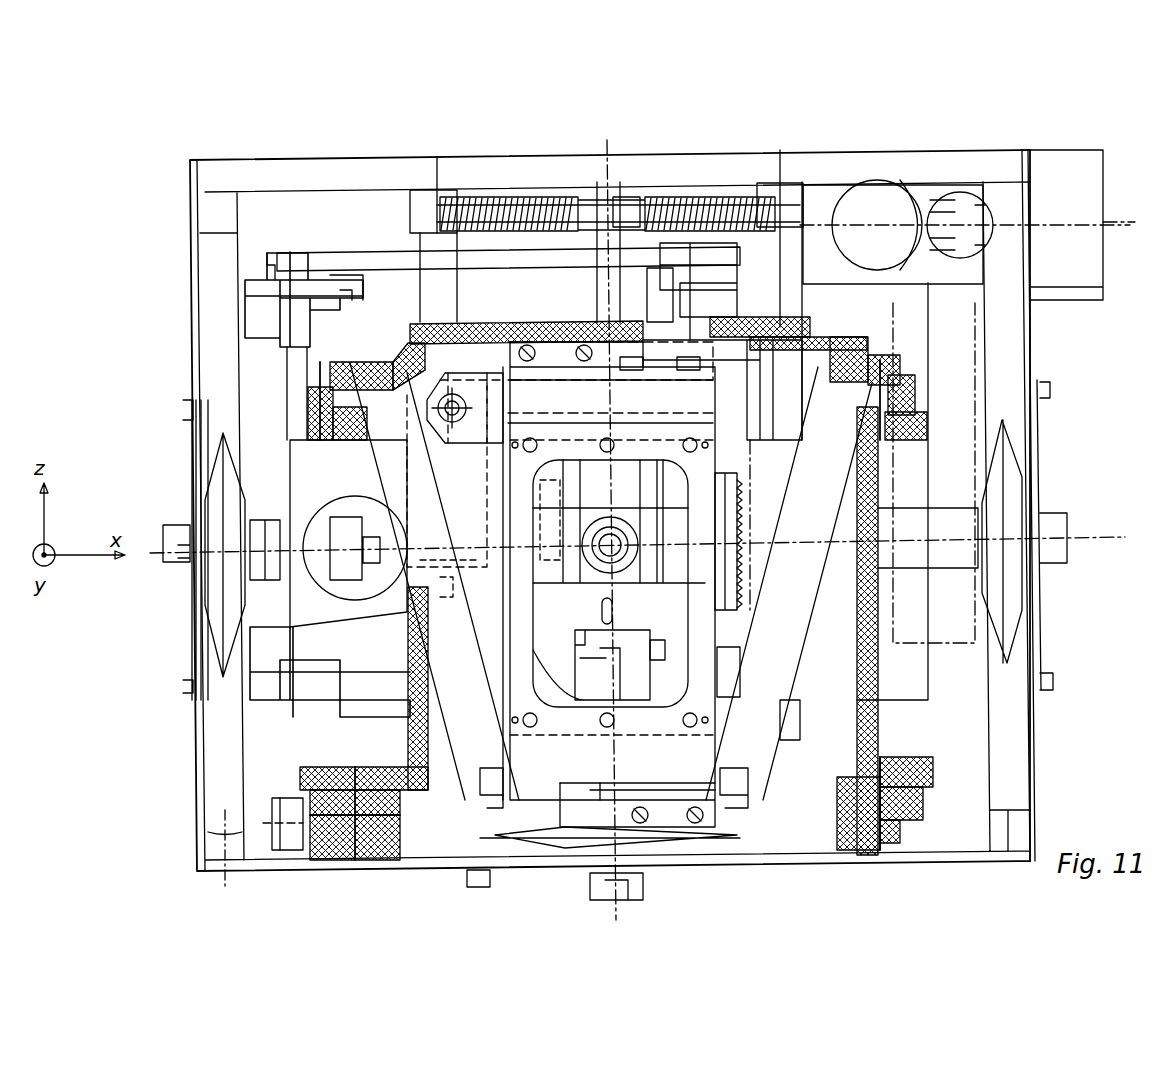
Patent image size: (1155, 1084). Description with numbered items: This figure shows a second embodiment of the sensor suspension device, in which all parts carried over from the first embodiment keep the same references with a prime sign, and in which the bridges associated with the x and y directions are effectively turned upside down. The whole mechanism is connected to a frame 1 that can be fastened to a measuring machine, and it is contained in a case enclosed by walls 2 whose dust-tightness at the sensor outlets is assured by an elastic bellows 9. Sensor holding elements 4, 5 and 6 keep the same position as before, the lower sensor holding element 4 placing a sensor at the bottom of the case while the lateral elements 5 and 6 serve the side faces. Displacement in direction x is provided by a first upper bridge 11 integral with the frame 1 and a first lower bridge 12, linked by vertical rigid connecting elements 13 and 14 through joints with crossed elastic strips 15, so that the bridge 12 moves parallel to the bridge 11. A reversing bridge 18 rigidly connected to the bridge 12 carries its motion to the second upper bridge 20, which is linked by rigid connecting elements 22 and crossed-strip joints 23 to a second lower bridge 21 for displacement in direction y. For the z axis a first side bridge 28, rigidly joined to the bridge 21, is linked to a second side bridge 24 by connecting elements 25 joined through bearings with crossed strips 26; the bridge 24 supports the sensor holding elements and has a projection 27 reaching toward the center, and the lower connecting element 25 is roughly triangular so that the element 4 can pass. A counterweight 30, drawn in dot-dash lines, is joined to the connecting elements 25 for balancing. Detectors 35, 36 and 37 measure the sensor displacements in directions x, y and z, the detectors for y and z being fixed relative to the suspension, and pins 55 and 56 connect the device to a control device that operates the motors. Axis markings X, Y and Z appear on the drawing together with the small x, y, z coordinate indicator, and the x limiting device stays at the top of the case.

The frame 1 is at (1050, 160).
The walls 2 is at (190, 306).
The lower sensor holding element 4 is at (573, 764).
The sensor holding element 5 is at (268, 530).
The sensor holding element 6 is at (950, 520).
The elastic bellows 9 is at (220, 468).
The first upper bridge 11 is at (853, 833).
The first lower bridge 12 is at (848, 337).
The vertical rigid connecting element 13 is at (408, 648).
The vertical rigid connecting element 14 is at (878, 672).
The joint with crossed elastic strips 15 is at (313, 432).
The reversing bridge 18 is at (611, 581).
The second upper bridge 20 is at (490, 775).
The second lower bridge 21 is at (720, 387).
The rigid connecting element 22 is at (517, 480).
The joint with crossed strips 23 is at (580, 365).
The second side bridge 24 is at (290, 410).
The connecting element 25 is at (377, 258).
The bearing with crossed strips 26 is at (300, 292).
The projection 27 is at (447, 488).
The first side bridge 28 is at (742, 568).
The counterweight 30 is at (955, 632).
The transducer 35 is at (280, 800).
The transducer 36 is at (420, 415).
The transducer 37 is at (582, 600).
The pin 55 is at (965, 232).
The pin 56 is at (960, 252).
The direction x is at (577, 232).
The direction y is at (512, 330).
The z axis z is at (793, 730).
The X direction X is at (293, 823).
The Y direction Y is at (455, 398).
The Z direction Z is at (657, 650).